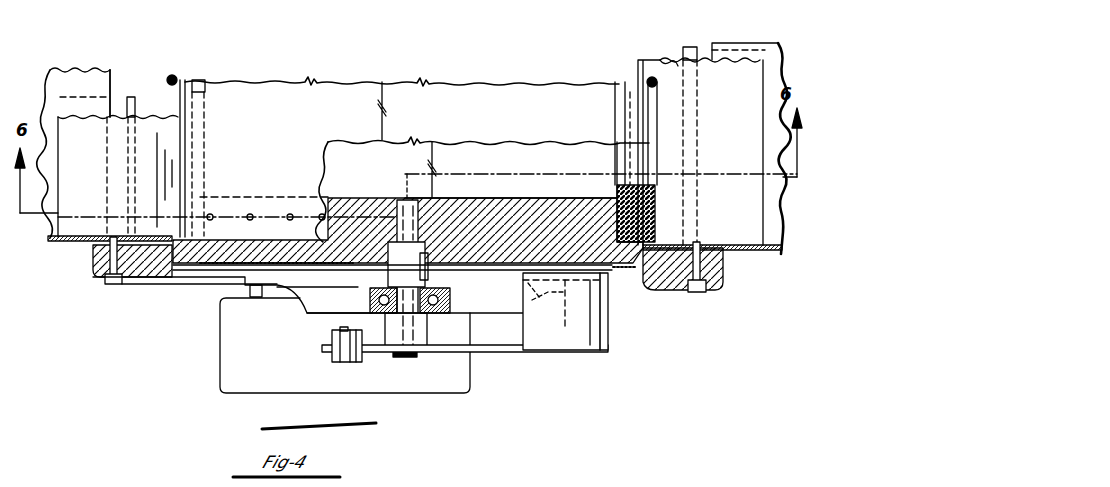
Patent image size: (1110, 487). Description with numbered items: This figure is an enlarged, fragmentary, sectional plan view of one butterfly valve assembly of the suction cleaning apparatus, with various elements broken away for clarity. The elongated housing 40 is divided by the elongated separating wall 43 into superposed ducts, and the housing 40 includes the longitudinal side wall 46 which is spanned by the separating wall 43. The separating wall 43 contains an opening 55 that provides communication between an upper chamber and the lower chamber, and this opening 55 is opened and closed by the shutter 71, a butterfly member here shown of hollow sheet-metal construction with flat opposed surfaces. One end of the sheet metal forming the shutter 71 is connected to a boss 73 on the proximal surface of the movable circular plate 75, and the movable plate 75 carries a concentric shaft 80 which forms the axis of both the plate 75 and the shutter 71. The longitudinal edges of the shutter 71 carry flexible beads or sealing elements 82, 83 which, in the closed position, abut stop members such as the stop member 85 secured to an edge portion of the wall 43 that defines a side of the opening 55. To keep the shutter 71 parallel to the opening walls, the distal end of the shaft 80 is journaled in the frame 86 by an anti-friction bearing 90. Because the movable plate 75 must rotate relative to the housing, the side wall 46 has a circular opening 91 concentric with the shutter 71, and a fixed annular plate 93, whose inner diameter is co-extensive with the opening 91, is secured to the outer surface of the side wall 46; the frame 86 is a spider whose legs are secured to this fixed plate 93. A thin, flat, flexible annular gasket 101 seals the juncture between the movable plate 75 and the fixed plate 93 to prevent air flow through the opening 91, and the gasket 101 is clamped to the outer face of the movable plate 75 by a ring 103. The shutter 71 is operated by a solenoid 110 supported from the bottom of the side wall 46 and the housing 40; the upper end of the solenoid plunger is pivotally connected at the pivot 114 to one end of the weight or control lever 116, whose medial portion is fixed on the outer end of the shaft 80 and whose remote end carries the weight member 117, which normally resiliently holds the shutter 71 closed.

The elongated housing 40 is at (56, 246).
The separating wall 43 is at (62, 72).
The side wall 46 is at (749, 245).
The opening 55 is at (110, 81).
The shutter 71 is at (454, 82).
The boss 73 is at (328, 176).
The movable plate 75 is at (236, 244).
The shaft 80 is at (401, 210).
The sealing element 82 is at (649, 134).
The sealing element 83 is at (164, 78).
The stop member 85 is at (129, 100).
The frame 86 is at (306, 312).
The anti-friction bearing 90 is at (368, 297).
The circular opening 91 is at (168, 237).
The fixed plate 93 is at (94, 268).
The gasket 101 is at (168, 258).
The ring 103 is at (211, 262).
The solenoid 110 is at (218, 370).
The pivotal connection 114 is at (343, 363).
The control lever 116 is at (448, 352).
The weight member 117 is at (598, 328).